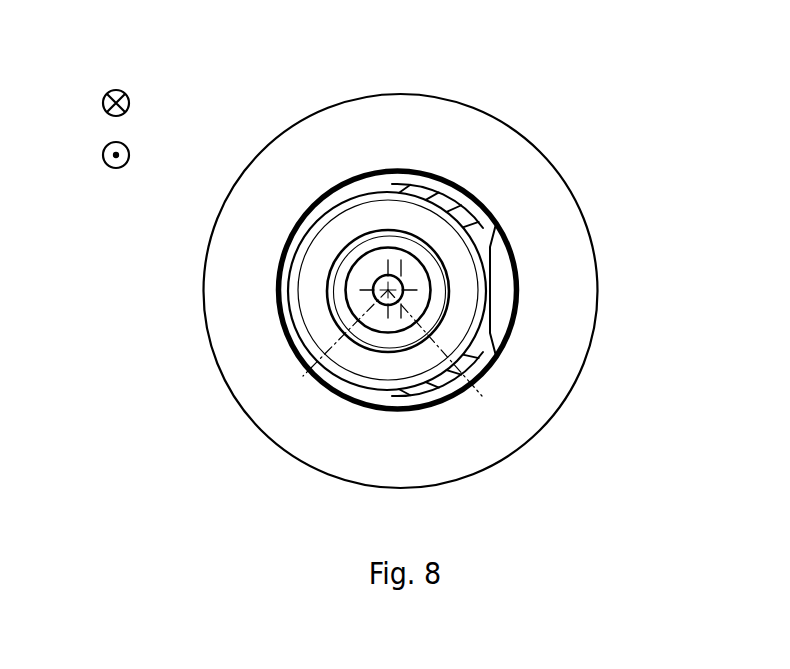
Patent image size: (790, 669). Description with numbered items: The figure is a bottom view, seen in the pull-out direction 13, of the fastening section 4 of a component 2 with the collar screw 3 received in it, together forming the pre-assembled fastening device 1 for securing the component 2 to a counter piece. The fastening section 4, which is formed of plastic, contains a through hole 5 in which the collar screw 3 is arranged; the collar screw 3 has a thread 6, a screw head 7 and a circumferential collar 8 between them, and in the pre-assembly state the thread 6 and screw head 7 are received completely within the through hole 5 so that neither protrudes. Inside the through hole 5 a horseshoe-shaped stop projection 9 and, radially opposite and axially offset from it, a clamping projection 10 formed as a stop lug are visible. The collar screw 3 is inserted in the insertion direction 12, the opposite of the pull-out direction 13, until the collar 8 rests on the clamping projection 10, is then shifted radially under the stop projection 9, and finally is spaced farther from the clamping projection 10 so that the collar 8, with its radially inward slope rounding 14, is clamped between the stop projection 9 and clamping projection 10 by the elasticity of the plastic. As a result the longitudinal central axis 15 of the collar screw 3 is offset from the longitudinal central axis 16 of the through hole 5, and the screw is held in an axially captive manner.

The fastening device 1 is at (633, 167).
The component 2 is at (443, 291).
The collar screw 3 is at (338, 186).
The fastening section 4 is at (577, 348).
The through hole 5 is at (486, 242).
The thread 6 is at (388, 348).
The screw head 7 is at (457, 198).
The collar 8 is at (307, 290).
The stop projection 9 is at (293, 242).
The clamping projection 10 is at (507, 289).
The insertion direction 12 is at (102, 155).
The pull-out direction 13 is at (102, 103).
The slope rounding 14 is at (300, 325).
The longitudinal central axis of the collar screw 15 is at (303, 376).
The longitudinal central axis of the through hole 16 is at (480, 393).